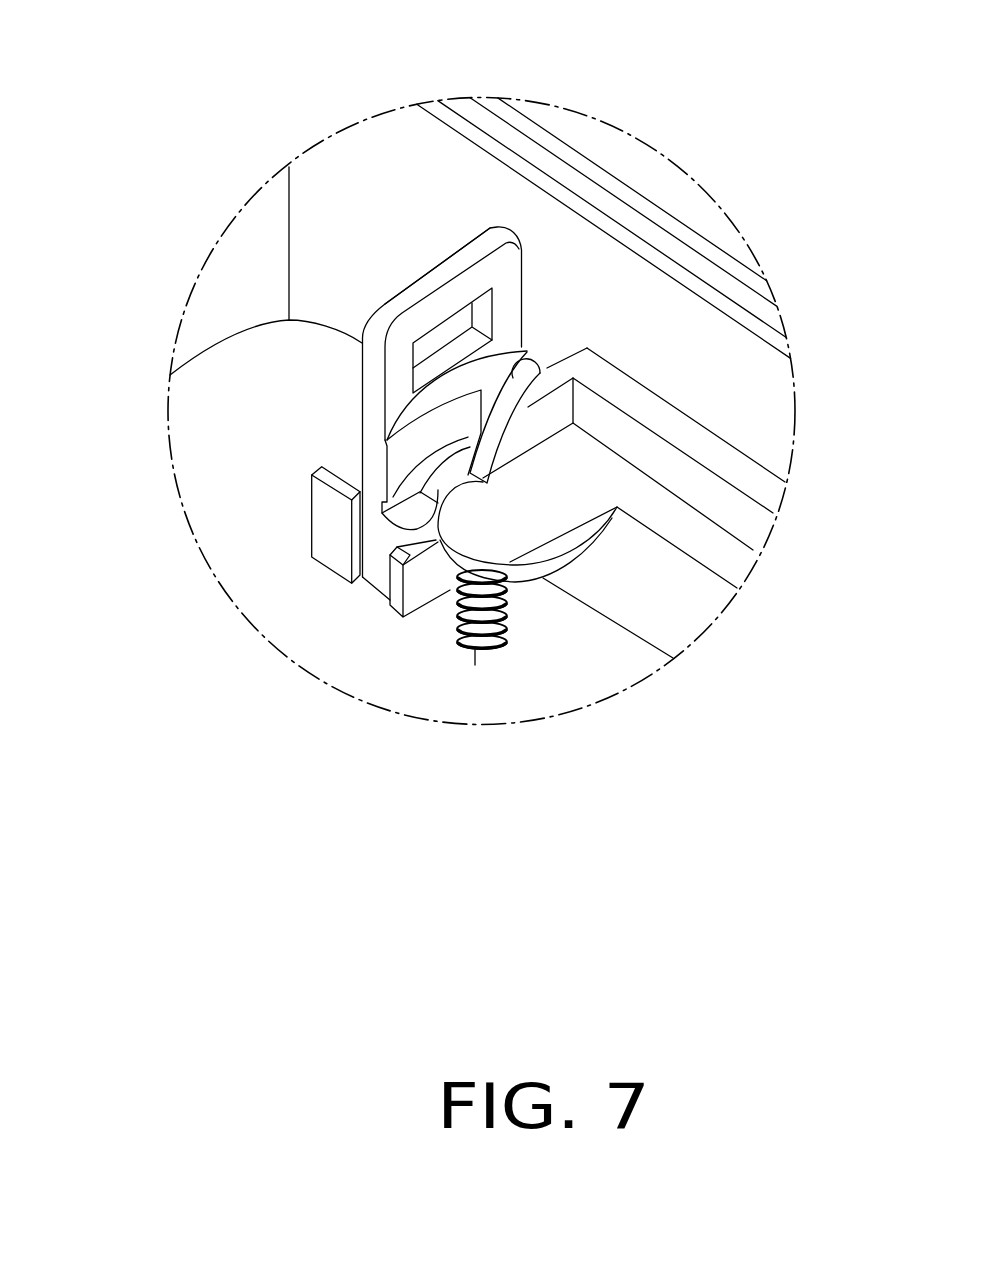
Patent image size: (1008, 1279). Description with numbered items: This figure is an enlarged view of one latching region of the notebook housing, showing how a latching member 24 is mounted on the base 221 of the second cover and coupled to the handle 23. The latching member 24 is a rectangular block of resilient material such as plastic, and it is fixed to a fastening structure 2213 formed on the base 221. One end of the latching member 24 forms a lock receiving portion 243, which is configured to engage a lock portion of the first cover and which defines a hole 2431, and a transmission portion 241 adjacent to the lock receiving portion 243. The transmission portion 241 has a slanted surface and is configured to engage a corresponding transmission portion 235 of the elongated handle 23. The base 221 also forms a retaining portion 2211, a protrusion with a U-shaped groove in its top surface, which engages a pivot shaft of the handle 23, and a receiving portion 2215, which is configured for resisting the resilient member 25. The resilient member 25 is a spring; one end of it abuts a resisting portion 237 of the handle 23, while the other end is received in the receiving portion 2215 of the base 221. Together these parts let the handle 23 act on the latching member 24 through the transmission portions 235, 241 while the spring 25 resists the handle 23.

The handle 23 is at (703, 440).
The transmission portion 235 is at (530, 367).
The resisting portion 237 is at (527, 532).
The transmission portion 241 is at (497, 391).
The lock receiving portion 243 is at (507, 268).
The hole 2431 is at (465, 318).
The latching member 24 is at (490, 376).
The base 221 is at (294, 598).
The retaining portion 2211 is at (417, 583).
The fastening structure 2213 is at (327, 515).
The receiving portion 2215 is at (474, 666).
The resilient member 25 is at (487, 633).